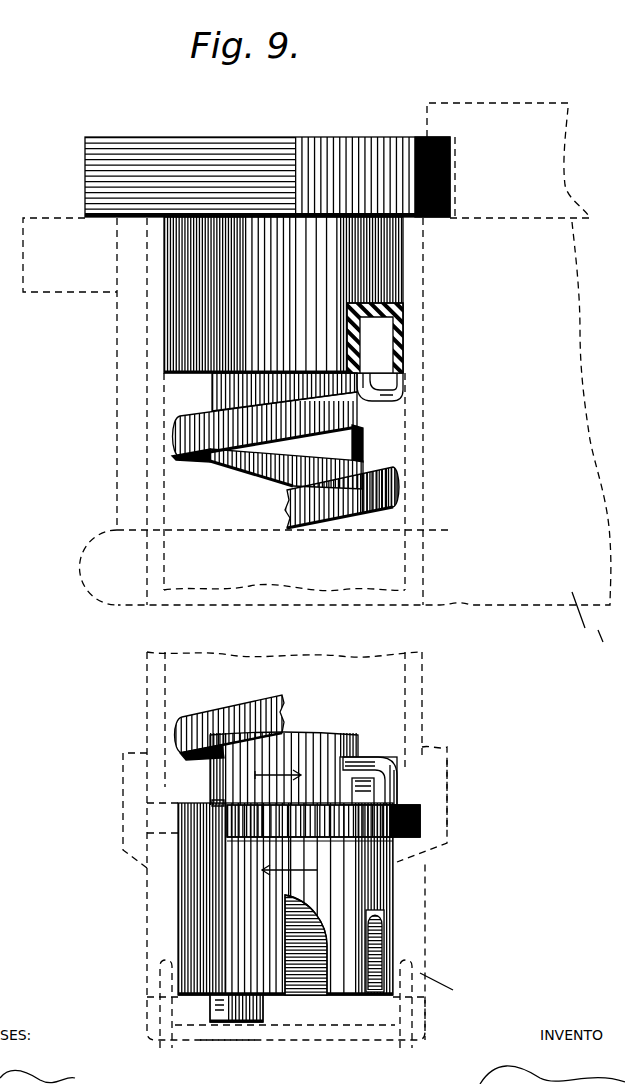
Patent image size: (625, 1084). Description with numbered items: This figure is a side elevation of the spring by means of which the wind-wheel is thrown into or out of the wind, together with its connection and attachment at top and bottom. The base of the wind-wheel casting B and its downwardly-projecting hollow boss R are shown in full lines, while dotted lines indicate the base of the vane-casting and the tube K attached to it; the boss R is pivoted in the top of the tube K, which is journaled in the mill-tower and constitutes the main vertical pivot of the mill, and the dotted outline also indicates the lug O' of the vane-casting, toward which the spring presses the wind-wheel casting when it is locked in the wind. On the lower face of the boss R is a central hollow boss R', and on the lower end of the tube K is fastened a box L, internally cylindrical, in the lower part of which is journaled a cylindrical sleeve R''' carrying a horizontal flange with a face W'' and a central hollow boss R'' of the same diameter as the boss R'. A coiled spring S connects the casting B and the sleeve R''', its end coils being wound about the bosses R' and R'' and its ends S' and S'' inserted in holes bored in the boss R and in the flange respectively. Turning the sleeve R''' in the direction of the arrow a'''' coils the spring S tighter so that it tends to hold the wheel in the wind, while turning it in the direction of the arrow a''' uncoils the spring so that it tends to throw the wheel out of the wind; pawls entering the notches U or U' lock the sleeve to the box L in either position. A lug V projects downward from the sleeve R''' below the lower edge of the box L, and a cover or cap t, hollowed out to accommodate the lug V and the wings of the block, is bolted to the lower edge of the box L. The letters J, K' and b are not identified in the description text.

The frame J is at (555, 140).
The wind-wheel casting B is at (450, 197).
The hollow boss R is at (316, 295).
The lug of the vane-casting O' is at (84, 411).
The casing outline K' is at (261, 536).
The tube K is at (292, 633).
The upper end of the spring S' is at (401, 361).
The central hollow boss R' is at (307, 412).
The coiled spring S is at (315, 603).
The central hollow boss R'' is at (305, 748).
The lower end of the spring S'' is at (373, 763).
The face of the flange W'' is at (201, 785).
The arrow a'''' is at (278, 767).
The cylindrical sleeve R''' is at (356, 839).
The casing body b is at (417, 912).
The arrow a''' is at (289, 861).
The notch U is at (414, 950).
The notch U' is at (327, 962).
The lug V is at (220, 1010).
The box L is at (440, 770).
The cover or cap t is at (420, 1020).